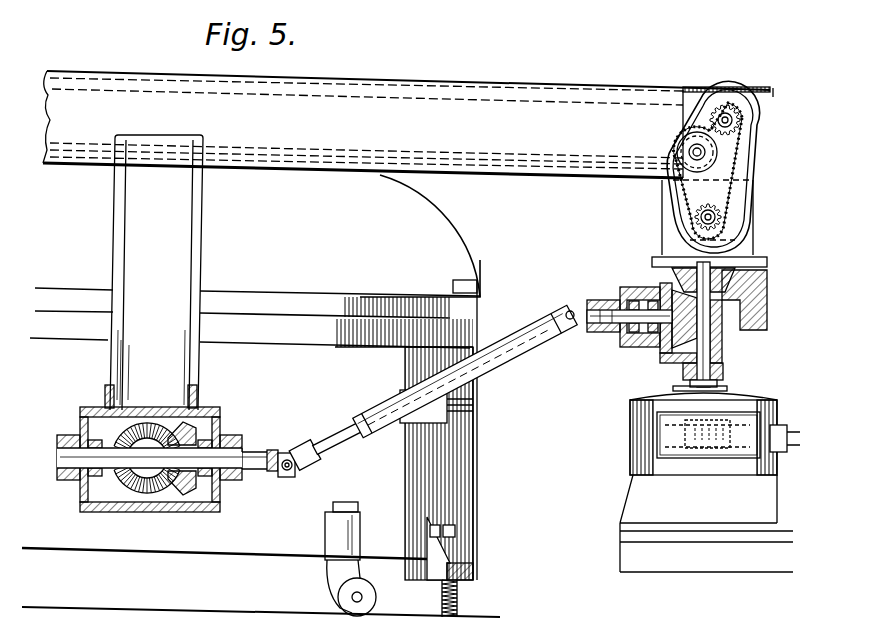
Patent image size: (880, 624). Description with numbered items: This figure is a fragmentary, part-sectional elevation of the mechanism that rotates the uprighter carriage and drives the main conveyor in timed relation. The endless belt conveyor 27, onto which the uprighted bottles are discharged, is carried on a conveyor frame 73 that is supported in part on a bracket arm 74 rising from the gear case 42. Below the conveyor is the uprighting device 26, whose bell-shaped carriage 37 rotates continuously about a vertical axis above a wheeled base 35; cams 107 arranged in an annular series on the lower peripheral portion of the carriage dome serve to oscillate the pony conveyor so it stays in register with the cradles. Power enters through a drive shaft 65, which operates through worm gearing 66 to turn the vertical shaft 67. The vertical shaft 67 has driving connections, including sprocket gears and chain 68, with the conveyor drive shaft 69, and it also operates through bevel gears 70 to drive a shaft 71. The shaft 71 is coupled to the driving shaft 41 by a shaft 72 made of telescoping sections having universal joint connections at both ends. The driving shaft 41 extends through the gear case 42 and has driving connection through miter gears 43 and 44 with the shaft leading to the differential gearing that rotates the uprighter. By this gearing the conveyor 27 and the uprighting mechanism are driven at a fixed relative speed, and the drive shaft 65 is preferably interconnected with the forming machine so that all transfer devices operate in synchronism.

The endless belt conveyor 27 is at (536, 81).
The conveyor frame 73 is at (337, 173).
The bracket arm 74 is at (203, 267).
The carriage 37 is at (428, 215).
The uprighting device 26 is at (485, 273).
The cams 107 is at (460, 330).
The wheeled base 35 is at (477, 461).
The shaft 72 is at (513, 357).
The driving shaft 41 is at (257, 472).
The gear case 42 is at (182, 512).
The miter gear 43 is at (188, 492).
The miter gear 44 is at (130, 500).
The sprocket gears and chain 68 is at (685, 193).
The conveyor drive shaft 69 is at (733, 119).
The bevel gears 70 is at (670, 282).
The vertical shaft 67 is at (717, 325).
The shaft 71 is at (610, 322).
The drive shaft 65 is at (793, 452).
The worm gearing 66 is at (696, 460).